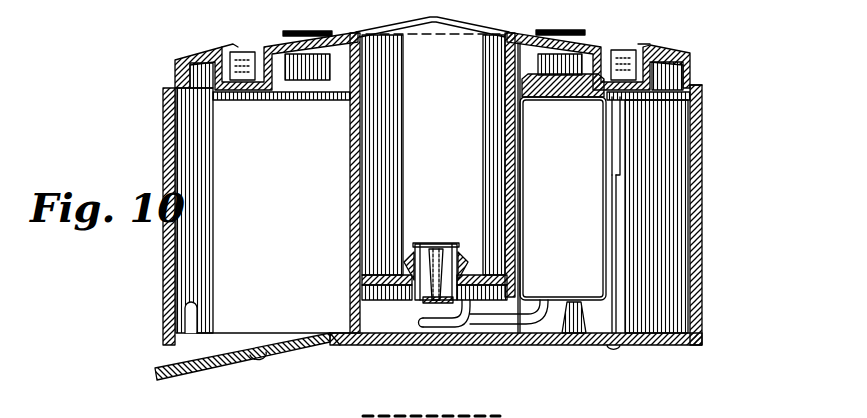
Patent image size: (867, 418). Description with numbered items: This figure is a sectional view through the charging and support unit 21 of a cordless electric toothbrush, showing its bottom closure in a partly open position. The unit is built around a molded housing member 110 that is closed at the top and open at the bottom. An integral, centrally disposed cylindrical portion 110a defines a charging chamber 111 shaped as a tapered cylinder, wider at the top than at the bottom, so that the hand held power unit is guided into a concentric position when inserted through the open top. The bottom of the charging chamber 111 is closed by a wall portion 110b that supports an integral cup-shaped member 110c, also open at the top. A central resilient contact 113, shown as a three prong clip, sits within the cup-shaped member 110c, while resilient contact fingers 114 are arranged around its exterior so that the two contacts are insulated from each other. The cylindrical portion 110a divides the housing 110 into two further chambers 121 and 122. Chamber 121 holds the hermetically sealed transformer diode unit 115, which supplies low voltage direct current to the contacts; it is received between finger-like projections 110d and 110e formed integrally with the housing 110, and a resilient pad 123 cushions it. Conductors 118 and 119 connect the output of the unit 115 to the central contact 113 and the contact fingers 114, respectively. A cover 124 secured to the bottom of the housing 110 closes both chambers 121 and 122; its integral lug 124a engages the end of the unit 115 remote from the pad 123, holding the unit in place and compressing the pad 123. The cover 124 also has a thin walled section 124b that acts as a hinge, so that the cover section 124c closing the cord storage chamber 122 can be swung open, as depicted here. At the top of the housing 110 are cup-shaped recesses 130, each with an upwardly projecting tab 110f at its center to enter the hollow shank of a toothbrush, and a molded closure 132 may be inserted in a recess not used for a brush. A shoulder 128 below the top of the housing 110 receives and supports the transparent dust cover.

The charging and support unit 21 is at (707, 256).
The molded housing member 110 is at (703, 148).
The cylindrical portion 110a is at (351, 210).
The wall portion 110b is at (380, 273).
The cup-shaped member 110c is at (450, 243).
The finger-like projection 110d is at (618, 178).
The finger-like projection 110e is at (522, 168).
The upwardly projecting tab 110f is at (243, 52).
The charging chamber 111 is at (455, 45).
The central resilient contact 113 is at (432, 247).
The resilient contact fingers 114 is at (410, 255).
The transformer diode assembly unit 115 is at (640, 260).
The conductor 118 is at (449, 333).
The conductor 119 is at (490, 333).
The chamber 121 is at (677, 222).
The chamber 122 is at (193, 237).
The resilient pad 123 is at (568, 96).
The cover 124 is at (672, 345).
The integral lug 124a is at (556, 345).
The thin walled section 124b is at (332, 341).
The cover section 124c is at (199, 370).
The shoulder 128 is at (700, 83).
The cup-shaped recess 130 is at (233, 45).
The molded closure 132 is at (332, 14).